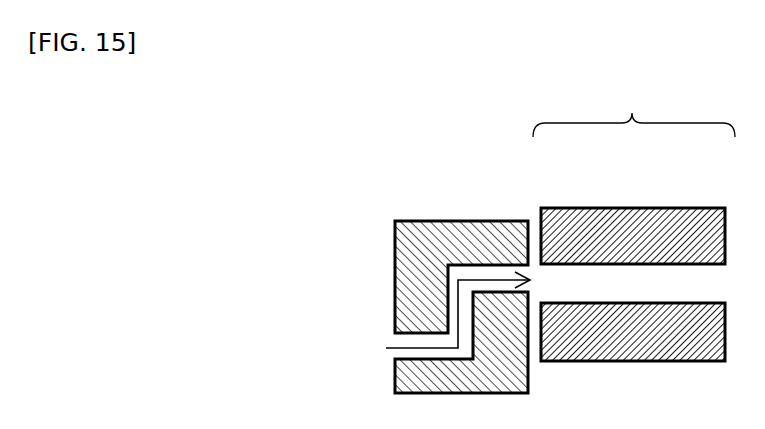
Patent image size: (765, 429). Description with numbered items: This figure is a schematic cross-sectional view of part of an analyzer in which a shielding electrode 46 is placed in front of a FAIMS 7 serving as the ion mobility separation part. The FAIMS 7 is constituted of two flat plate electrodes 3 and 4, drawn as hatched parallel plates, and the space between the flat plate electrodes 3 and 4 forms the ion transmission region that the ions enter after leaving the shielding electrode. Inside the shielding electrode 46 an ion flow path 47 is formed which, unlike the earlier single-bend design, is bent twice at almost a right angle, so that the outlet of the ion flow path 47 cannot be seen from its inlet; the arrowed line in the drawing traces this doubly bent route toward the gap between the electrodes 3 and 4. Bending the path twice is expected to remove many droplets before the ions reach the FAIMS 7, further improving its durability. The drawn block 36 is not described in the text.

The FAIMS 7 is at (634, 110).
The flat plate electrode 3 is at (627, 207).
The flat plate electrode 4 is at (640, 363).
The shielding electrode 46 is at (425, 220).
The lower block 36 is at (527, 284).
The ion flow path 47 is at (428, 345).